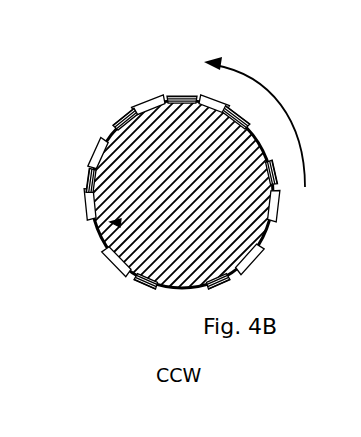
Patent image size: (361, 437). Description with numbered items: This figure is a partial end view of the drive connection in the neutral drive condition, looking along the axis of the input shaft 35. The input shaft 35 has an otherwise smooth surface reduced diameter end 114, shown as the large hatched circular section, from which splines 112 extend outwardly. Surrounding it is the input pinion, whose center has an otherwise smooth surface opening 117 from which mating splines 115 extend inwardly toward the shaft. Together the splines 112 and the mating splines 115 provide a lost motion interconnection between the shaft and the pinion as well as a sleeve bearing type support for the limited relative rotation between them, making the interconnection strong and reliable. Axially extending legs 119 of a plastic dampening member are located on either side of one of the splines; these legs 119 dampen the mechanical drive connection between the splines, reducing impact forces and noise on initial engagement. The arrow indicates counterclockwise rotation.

The input shaft 35 is at (104, 232).
The splines 112 is at (90, 147).
The reduced diameter end 114 is at (84, 204).
The mating splines 115 is at (176, 96).
The opening 117 is at (142, 93).
The axially extending legs 119 is at (83, 172).